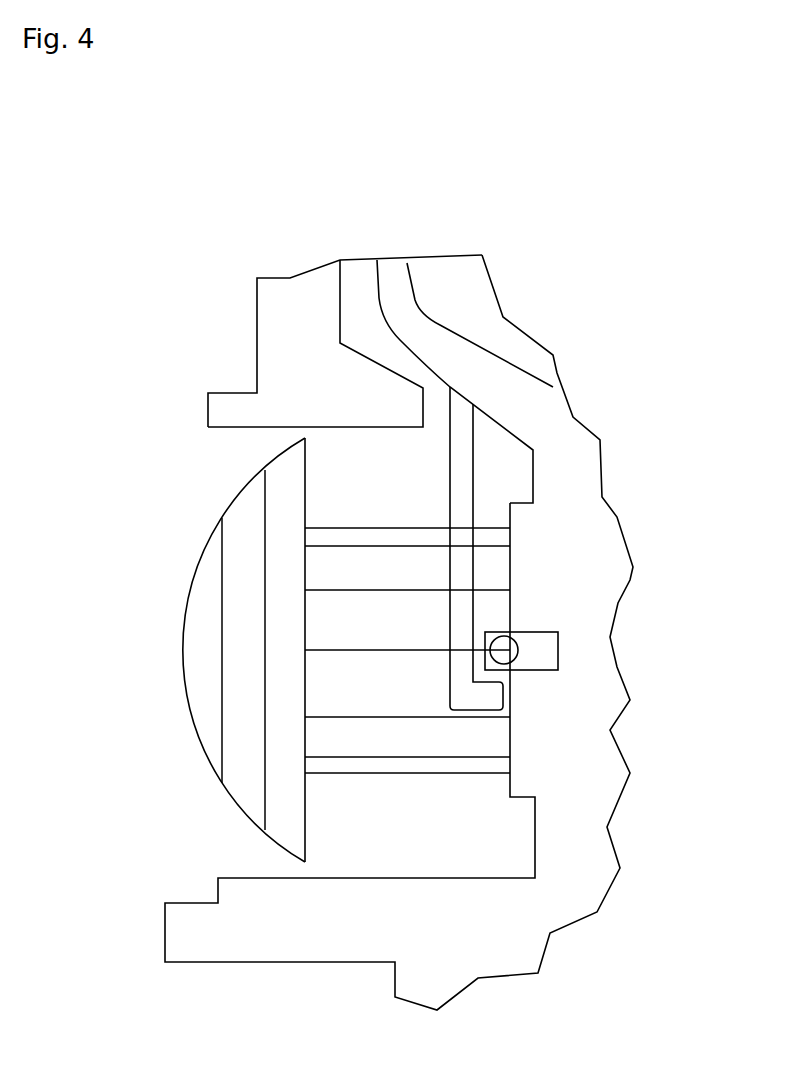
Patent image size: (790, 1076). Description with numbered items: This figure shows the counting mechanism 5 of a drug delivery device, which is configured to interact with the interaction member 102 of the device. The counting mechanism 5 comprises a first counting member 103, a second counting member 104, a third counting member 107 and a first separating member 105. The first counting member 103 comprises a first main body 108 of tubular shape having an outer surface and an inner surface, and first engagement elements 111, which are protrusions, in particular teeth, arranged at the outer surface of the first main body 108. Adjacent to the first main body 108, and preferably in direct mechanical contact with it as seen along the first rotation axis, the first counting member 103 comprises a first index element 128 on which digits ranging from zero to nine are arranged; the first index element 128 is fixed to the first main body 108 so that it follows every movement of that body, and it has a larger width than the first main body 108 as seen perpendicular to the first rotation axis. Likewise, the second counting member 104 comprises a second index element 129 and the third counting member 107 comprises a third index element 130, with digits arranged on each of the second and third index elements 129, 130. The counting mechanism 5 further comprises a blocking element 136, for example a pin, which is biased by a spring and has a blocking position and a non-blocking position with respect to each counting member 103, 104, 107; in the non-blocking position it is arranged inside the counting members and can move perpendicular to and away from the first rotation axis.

The counting mechanism 5 is at (90, 527).
The interaction member 102 is at (458, 447).
The first counting member 103 is at (410, 618).
The second counting member 104 is at (242, 795).
The first separating member 105 is at (470, 735).
The third counting member 107 is at (197, 695).
The first main body 108 is at (387, 600).
The first engagement elements 111 is at (395, 652).
The first index element 128 is at (280, 500).
The second index element 129 is at (233, 518).
The third index element 130 is at (187, 632).
The blocking element 136 is at (504, 650).